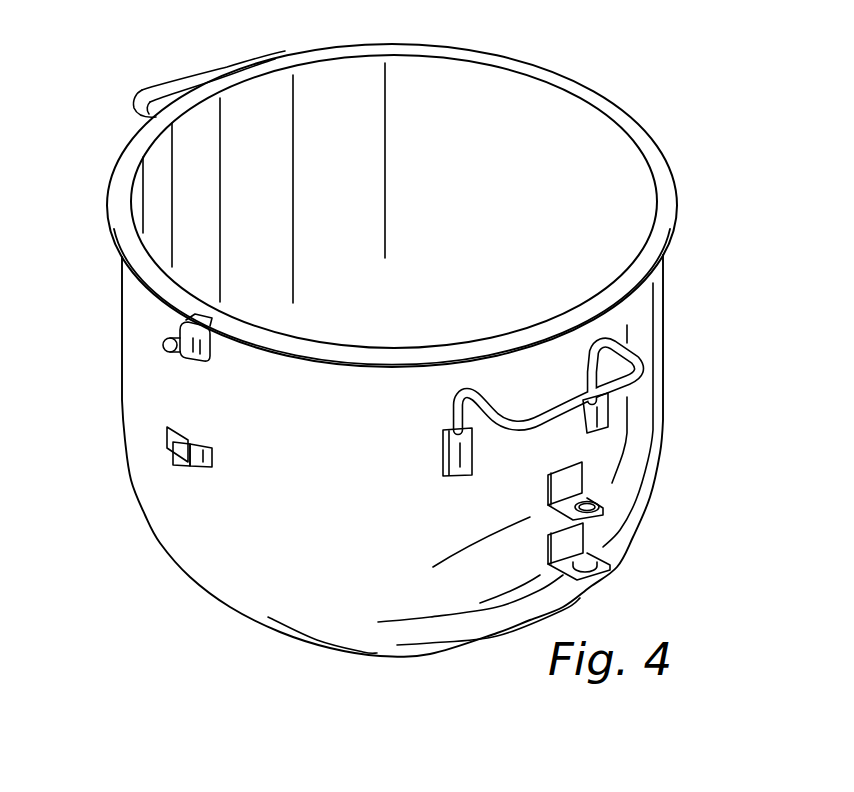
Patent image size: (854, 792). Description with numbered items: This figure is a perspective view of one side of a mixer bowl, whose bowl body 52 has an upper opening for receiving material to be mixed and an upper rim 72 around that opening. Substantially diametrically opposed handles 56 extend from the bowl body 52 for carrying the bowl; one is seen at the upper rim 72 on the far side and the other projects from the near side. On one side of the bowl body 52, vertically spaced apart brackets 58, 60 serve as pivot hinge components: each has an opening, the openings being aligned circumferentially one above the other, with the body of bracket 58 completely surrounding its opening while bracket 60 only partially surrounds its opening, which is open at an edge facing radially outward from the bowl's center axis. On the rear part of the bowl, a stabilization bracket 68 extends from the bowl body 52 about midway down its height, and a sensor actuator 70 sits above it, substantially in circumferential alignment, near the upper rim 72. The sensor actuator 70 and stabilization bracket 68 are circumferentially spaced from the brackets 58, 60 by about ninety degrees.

The bowl body 52 is at (253, 560).
The handles 56 is at (185, 77).
The bracket 58 is at (603, 510).
The bracket 60 is at (610, 568).
The stabilization bracket 68 is at (176, 461).
The sensor actuator 70 is at (165, 345).
The upper rim 72 is at (112, 242).